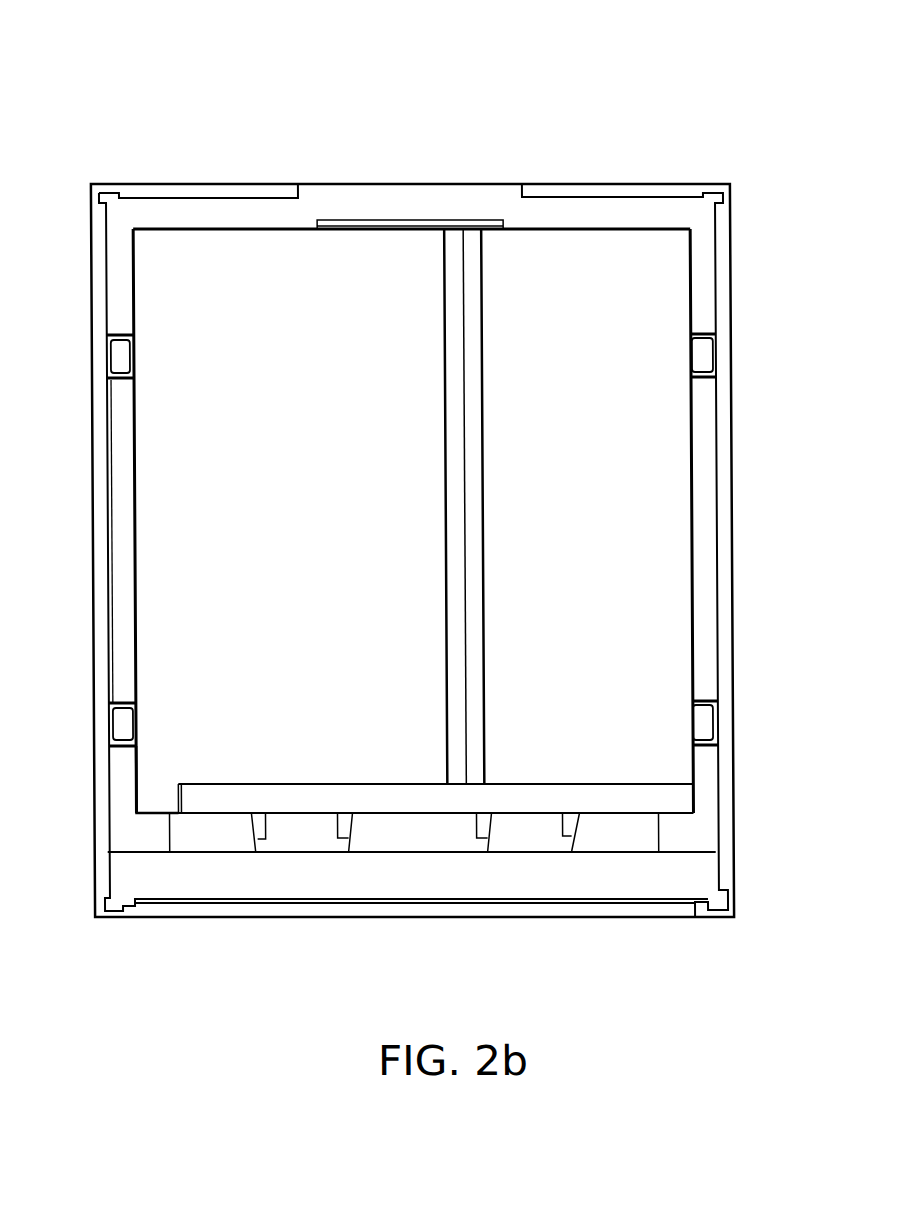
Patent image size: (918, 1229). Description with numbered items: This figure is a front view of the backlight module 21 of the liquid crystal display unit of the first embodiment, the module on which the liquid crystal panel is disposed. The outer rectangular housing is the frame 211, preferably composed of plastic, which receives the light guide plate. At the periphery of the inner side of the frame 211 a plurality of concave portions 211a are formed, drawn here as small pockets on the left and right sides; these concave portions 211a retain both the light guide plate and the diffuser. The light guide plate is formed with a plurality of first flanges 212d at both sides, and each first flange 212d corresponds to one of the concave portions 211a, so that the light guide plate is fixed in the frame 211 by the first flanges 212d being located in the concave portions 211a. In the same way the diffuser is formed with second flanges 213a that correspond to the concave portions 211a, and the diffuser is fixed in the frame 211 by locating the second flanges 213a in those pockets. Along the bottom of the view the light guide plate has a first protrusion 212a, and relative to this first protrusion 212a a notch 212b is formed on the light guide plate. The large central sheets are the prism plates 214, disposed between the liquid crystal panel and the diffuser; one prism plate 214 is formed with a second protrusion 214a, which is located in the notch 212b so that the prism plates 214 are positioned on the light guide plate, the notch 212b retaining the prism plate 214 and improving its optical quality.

The backlight module 21 is at (70, 33).
The frame 211 is at (725, 267).
The concave portions 211a is at (105, 337).
The first protrusion 212a is at (409, 795).
The notch 212b is at (179, 818).
The first flanges 212d is at (118, 382).
The second flanges 213a is at (125, 362).
The prism plates 214 is at (650, 547).
The second protrusion 214a is at (145, 797).